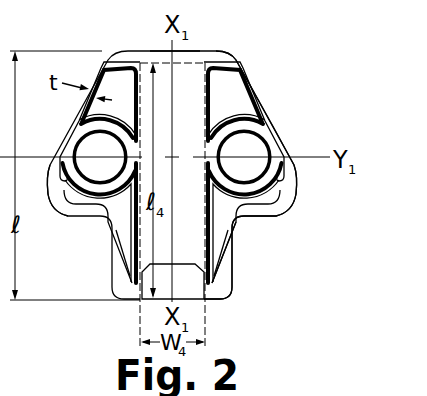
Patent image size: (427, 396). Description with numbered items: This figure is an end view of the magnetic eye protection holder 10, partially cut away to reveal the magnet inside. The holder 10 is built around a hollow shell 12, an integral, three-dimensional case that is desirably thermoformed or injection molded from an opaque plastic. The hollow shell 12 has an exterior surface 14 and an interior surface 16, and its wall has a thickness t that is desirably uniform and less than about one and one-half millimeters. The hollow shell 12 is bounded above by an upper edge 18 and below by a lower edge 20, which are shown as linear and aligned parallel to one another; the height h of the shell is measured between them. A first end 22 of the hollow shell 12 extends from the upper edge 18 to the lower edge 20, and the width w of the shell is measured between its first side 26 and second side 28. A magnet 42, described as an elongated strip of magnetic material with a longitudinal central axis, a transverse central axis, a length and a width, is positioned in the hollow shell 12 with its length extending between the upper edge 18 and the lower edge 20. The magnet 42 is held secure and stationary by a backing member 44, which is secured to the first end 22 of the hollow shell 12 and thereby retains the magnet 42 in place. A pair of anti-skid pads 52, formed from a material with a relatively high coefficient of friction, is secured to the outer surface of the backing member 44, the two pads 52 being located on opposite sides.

The magnetic eye protection holder 10 is at (245, 33).
The hollow shell 12 is at (261, 240).
The exterior surface 14 is at (252, 66).
The interior surface 16 is at (250, 90).
The upper edge 18 is at (203, 51).
The lower edge 20 is at (211, 298).
The first end 22 is at (267, 113).
The first side 26 is at (297, 157).
The second side 28 is at (53, 165).
The magnet 42 is at (198, 288).
The backing member 44 is at (232, 265).
The anti-skid pad 52 is at (88, 147).